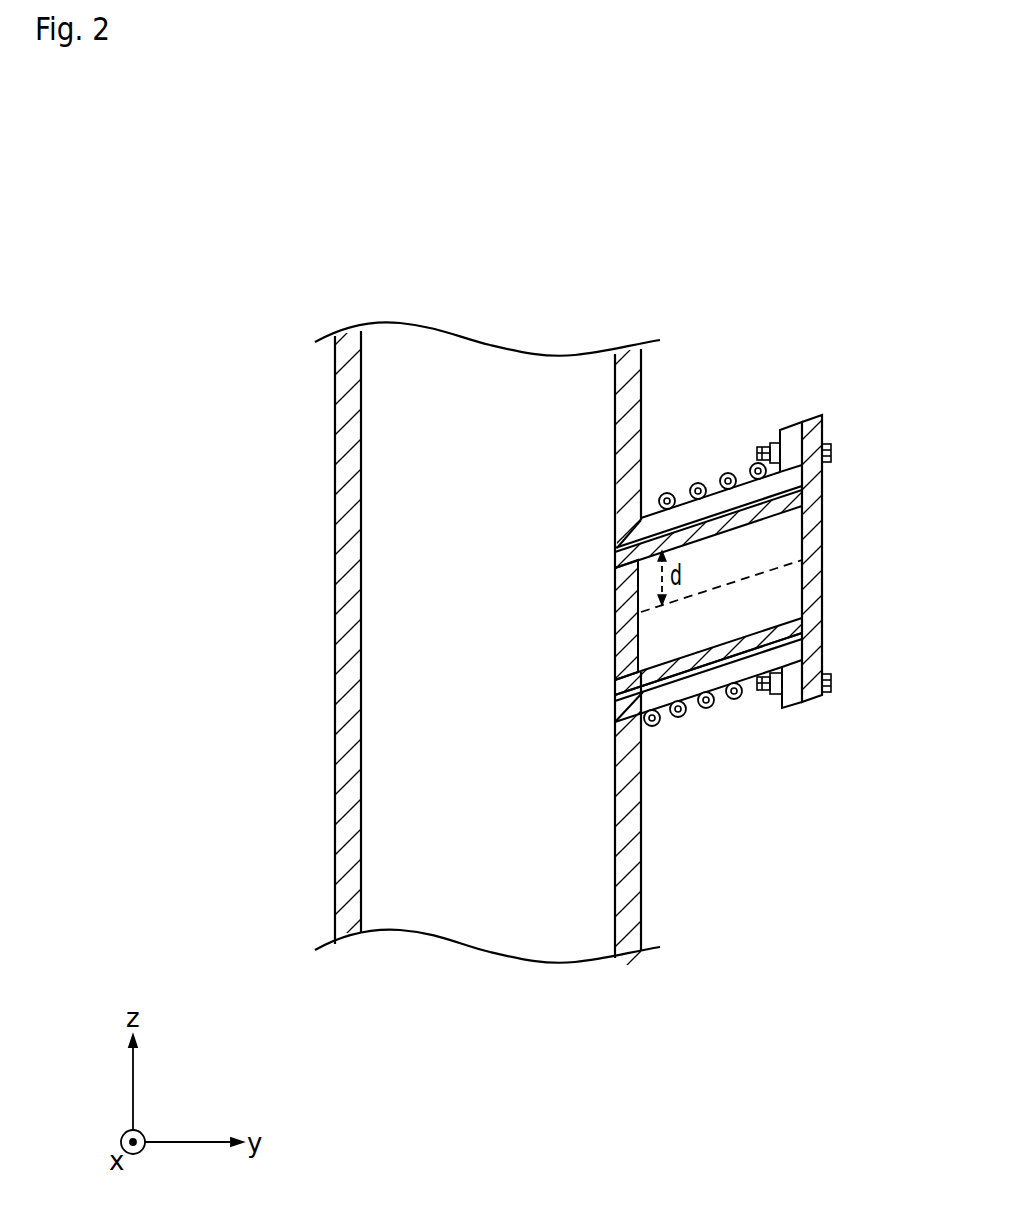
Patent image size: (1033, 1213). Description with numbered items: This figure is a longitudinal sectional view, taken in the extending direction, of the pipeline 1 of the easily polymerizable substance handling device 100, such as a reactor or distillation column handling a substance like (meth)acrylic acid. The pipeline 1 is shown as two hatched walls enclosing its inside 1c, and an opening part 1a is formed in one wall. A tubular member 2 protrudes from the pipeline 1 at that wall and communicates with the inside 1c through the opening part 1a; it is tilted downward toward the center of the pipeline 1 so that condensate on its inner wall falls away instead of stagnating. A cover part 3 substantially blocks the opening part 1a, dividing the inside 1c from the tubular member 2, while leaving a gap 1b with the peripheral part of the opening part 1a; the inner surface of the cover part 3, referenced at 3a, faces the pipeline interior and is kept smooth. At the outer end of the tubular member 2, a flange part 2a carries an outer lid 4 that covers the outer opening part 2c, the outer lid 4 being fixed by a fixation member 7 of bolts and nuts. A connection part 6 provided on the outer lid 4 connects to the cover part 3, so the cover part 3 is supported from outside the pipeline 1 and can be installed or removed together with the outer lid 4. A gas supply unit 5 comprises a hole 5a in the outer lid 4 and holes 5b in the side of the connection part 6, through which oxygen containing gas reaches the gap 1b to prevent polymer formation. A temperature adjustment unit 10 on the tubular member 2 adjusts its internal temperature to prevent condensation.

The easily polymerizable substance handling device 100 is at (314, 404).
The pipeline 1 is at (345, 497).
The opening part 1a is at (616, 552).
The gap 1b is at (606, 700).
The inside of the pipeline 1c is at (432, 669).
The tubular member 2 is at (676, 692).
The flange part 2a is at (790, 698).
The outer opening part 2c is at (802, 531).
The cover part 3 is at (624, 638).
The sleeve outer surface 3a is at (613, 662).
The outer lid 4 is at (813, 487).
The gas supply unit 5 is at (907, 598).
The hole 5a is at (812, 558).
The hole 5b is at (745, 510).
The connection part 6 is at (710, 660).
The fixation member 7 is at (848, 691).
The temperature adjustment unit 10 is at (696, 480).